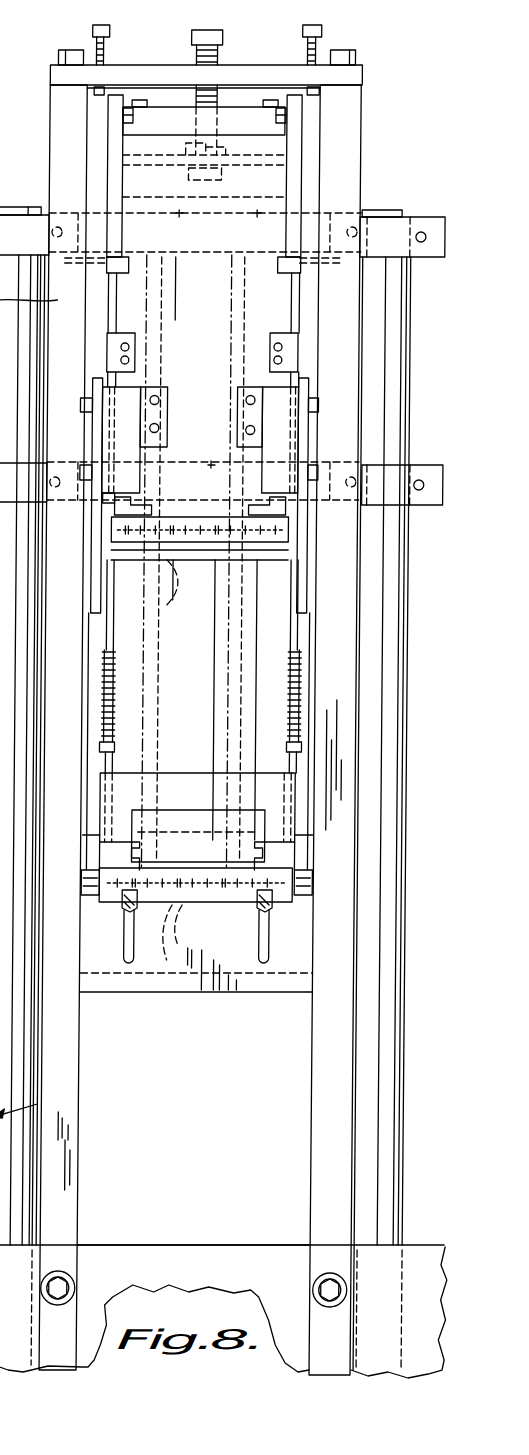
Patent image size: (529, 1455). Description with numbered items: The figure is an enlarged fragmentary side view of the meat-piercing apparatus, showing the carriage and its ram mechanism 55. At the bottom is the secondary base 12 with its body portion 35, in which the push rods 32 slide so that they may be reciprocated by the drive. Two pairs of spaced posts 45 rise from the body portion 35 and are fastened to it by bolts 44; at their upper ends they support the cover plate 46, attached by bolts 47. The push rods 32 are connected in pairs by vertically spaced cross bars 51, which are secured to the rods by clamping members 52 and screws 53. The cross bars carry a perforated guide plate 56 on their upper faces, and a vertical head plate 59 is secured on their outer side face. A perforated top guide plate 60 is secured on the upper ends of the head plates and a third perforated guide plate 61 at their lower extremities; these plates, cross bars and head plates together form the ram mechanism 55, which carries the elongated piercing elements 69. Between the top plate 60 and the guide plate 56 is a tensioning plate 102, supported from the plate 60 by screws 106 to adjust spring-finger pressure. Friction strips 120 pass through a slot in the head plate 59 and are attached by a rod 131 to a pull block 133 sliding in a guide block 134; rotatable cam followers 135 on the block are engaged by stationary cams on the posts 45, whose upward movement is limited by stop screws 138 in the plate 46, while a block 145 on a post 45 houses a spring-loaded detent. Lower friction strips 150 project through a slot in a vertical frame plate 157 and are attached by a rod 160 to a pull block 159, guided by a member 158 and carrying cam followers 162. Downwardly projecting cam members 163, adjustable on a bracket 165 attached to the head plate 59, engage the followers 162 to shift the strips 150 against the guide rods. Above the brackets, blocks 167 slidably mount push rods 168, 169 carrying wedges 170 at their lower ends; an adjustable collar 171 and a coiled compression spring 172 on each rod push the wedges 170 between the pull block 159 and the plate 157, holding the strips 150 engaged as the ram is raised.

The secondary base 12 is at (268, 1266).
The push rods 32 is at (24, 1053).
The body portion 35 is at (192, 1262).
The bolts 44 is at (86, 1290).
The posts 45 is at (348, 314).
The cover plate 46 is at (116, 73).
The bolts 47 is at (60, 52).
The cross bars 51 is at (272, 196).
The clamping members 52 is at (442, 233).
The screws 53 is at (436, 497).
The ram mechanism 55 is at (264, 241).
The perforated guide plate 56 is at (187, 222).
The head plate 59 is at (157, 195).
The top guide plate 60 is at (157, 106).
The third perforated guide plate 61 is at (245, 562).
The piercing elements 69 is at (258, 641).
The tensioning plate 102 is at (266, 132).
The screws 106 is at (218, 30).
The friction strips 120 is at (193, 598).
The rod 131 is at (178, 548).
The pull block 133 is at (254, 512).
The guide block 134 is at (112, 497).
The cam followers 135 is at (300, 530).
The stop screws 138 is at (100, 24).
The block 145 is at (292, 245).
The friction strips 150 is at (182, 910).
The vertical frame plate 157 is at (165, 983).
The member 158 is at (198, 818).
The pull block 159 is at (292, 893).
The rod 160 is at (197, 929).
The cam followers 162 is at (312, 883).
The cam members 163 is at (303, 481).
The bracket 165 is at (278, 416).
The blocks 167 is at (276, 350).
The push rod 168 is at (291, 378).
The push rods 169 is at (280, 791).
The wedges 170 is at (296, 855).
The adjustable collar 171 is at (287, 750).
The coiled compression spring 172 is at (300, 668).